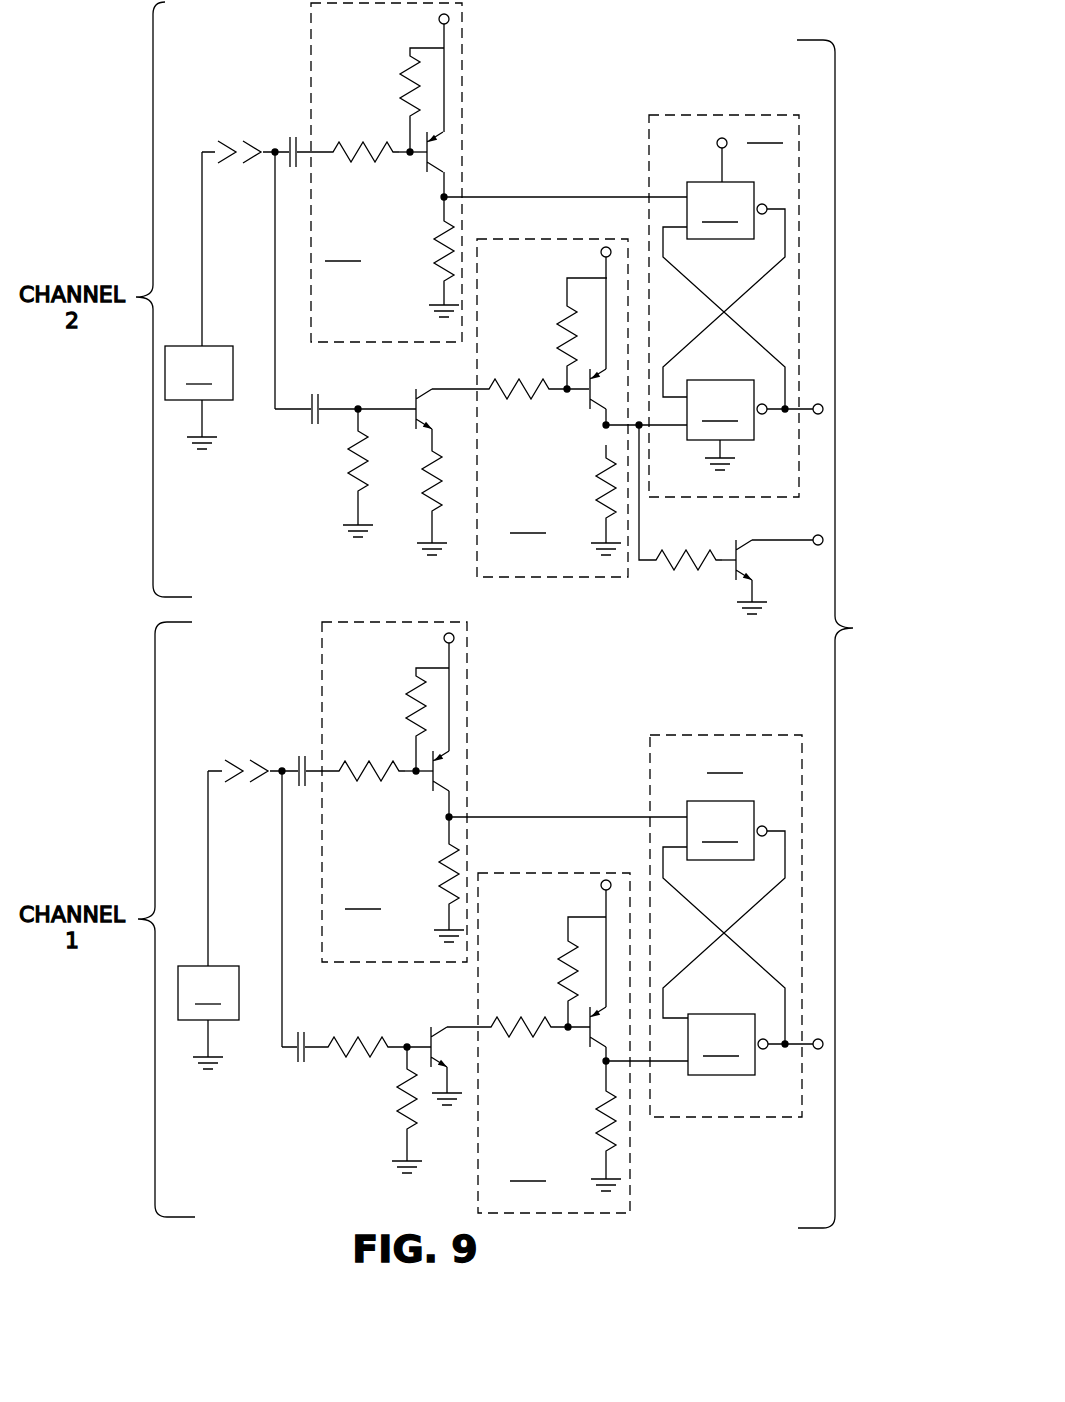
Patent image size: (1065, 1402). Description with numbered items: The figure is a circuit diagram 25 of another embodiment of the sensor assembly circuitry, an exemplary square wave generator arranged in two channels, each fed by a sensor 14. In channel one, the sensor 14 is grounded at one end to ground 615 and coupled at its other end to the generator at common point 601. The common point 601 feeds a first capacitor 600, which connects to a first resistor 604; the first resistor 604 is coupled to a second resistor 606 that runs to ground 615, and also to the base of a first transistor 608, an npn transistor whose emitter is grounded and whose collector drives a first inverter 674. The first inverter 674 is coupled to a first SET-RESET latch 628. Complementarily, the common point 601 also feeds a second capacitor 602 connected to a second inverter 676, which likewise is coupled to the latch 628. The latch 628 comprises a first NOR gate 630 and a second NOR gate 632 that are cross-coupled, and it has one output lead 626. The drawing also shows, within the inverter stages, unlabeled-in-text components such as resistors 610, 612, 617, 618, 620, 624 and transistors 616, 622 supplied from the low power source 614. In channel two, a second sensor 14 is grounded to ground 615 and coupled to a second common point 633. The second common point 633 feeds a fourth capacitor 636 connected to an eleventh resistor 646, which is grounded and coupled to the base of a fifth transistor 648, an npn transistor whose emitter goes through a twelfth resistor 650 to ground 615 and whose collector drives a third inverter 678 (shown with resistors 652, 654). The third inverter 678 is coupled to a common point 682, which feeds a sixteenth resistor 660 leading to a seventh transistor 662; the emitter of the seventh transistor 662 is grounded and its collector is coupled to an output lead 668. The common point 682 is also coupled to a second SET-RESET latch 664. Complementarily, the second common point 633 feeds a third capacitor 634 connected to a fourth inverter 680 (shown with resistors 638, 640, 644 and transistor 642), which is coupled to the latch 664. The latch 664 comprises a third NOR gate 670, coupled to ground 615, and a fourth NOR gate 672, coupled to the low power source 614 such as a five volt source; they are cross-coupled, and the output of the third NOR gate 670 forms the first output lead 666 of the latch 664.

The sensor 14 is at (202, 604).
The circuit diagram 25 is at (860, 624).
The first capacitor 600 is at (300, 1065).
The common point 601 is at (282, 768).
The second capacitor 602 is at (299, 757).
The first resistor 604 is at (335, 1058).
The second resistor 606 is at (400, 1085).
The first transistor 608 is at (445, 1060).
The resistor 610 is at (520, 1022).
The resistor 612 is at (560, 985).
The low power source 614 is at (448, 23).
The ground 615 is at (440, 322).
The transistor 616 is at (612, 376).
The resistor 617 is at (600, 1130).
The resistor 618 is at (385, 770).
The resistor 620 is at (410, 700).
The transistor 622 is at (455, 776).
The resistor 624 is at (445, 870).
The output lead 626 is at (785, 990).
The first SET-RESET latch 628 is at (726, 926).
The first NOR gate 630 is at (750, 1044).
The second NOR gate 632 is at (727, 830).
The second common point 633 is at (275, 150).
The third capacitor 634 is at (291, 136).
The fourth capacitor 636 is at (312, 424).
The resistor 638 is at (380, 150).
The resistor 640 is at (410, 82).
The transistor 642 is at (450, 156).
The resistor 644 is at (440, 240).
The eleventh resistor 646 is at (355, 472).
The fifth transistor 648 is at (420, 413).
The twelfth resistor 650 is at (435, 505).
The resistor 652 is at (520, 385).
The resistor 654 is at (560, 345).
The sixteenth resistor 660 is at (686, 568).
The seventh transistor 662 is at (753, 578).
The second SET-RESET latch 664 is at (724, 306).
The first output lead 666 is at (785, 352).
The output lead 668 is at (815, 547).
The third NOR gate 670 is at (750, 419).
The fourth NOR gate 672 is at (727, 193).
The first inverter 674 is at (554, 1043).
The second inverter 676 is at (394, 792).
The third inverter 678 is at (552, 408).
The fourth inverter 680 is at (386, 172).
The common point 682 is at (641, 428).